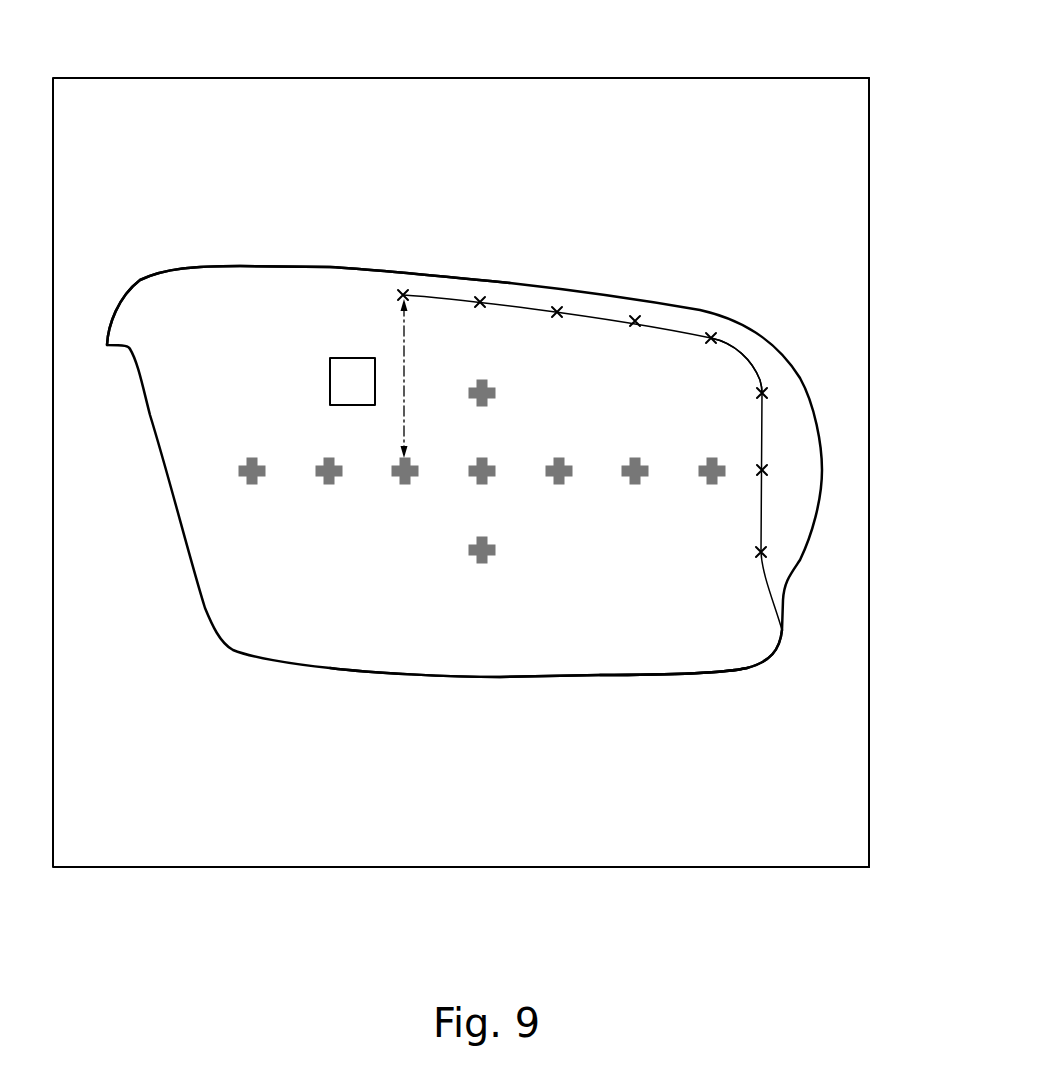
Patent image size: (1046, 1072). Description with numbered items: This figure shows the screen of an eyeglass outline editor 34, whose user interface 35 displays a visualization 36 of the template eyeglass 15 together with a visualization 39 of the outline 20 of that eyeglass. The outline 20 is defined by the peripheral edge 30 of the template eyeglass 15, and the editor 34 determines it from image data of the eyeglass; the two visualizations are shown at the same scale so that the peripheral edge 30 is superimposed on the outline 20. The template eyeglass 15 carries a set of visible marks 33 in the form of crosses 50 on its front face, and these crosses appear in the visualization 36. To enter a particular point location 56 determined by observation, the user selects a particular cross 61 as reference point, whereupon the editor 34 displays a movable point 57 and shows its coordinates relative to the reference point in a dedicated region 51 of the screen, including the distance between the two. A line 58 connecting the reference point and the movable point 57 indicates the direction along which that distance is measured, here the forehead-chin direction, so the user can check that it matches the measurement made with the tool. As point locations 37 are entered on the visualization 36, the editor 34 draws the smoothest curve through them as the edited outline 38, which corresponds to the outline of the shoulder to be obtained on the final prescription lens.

The visualization of the outline 39 is at (316, 120).
The user interface 35 is at (870, 753).
The eyeglass outline editor 34 is at (880, 845).
The outline 20 is at (333, 266).
The peripheral edge 30 is at (288, 266).
The template eyeglass 15 is at (593, 677).
The eyeglass visualization 36 is at (679, 703).
The particular point location 56 is at (403, 295).
The edited outline 38 is at (735, 347).
The movable point 57 is at (403, 295).
The point locations 37 is at (480, 302).
The line 58 is at (407, 364).
The dedicated region 51 is at (350, 358).
The crosses 50 is at (255, 472).
The particular cross 61 is at (407, 474).
The visible marks 33 is at (479, 585).